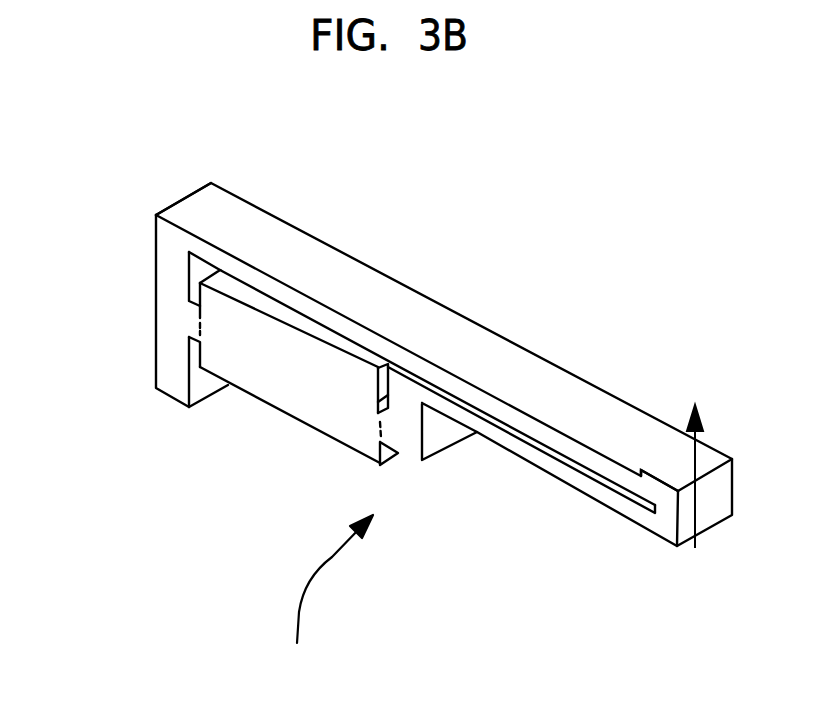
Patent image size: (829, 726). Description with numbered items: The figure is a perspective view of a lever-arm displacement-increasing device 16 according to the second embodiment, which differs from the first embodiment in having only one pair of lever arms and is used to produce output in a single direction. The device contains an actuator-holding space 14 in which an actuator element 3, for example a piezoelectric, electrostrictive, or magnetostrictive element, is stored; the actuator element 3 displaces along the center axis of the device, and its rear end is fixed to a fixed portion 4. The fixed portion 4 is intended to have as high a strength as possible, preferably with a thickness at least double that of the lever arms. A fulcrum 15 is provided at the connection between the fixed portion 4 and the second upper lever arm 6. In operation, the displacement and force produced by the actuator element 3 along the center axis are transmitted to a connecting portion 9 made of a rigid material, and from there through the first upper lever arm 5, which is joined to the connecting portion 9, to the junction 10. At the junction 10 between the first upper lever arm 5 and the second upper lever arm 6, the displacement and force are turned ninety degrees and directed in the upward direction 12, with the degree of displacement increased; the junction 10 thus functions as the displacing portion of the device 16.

The actuator element 3 is at (305, 367).
The fixed portion 4 is at (170, 307).
The first upper lever arm 5 is at (518, 447).
The second upper lever arm 6 is at (470, 392).
The connecting portion 9 is at (383, 430).
The junction 10 is at (667, 503).
The upward direction 12 is at (697, 463).
The actuator-holding space 14 is at (207, 272).
The fulcrum 15 is at (172, 233).
The lever-arm displacement-increasing device 16 is at (312, 679).